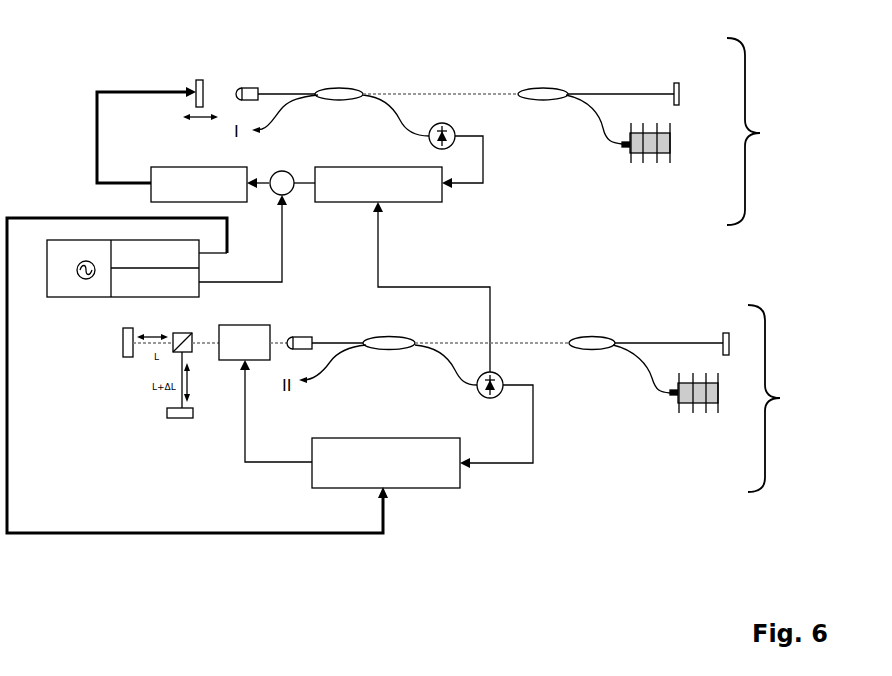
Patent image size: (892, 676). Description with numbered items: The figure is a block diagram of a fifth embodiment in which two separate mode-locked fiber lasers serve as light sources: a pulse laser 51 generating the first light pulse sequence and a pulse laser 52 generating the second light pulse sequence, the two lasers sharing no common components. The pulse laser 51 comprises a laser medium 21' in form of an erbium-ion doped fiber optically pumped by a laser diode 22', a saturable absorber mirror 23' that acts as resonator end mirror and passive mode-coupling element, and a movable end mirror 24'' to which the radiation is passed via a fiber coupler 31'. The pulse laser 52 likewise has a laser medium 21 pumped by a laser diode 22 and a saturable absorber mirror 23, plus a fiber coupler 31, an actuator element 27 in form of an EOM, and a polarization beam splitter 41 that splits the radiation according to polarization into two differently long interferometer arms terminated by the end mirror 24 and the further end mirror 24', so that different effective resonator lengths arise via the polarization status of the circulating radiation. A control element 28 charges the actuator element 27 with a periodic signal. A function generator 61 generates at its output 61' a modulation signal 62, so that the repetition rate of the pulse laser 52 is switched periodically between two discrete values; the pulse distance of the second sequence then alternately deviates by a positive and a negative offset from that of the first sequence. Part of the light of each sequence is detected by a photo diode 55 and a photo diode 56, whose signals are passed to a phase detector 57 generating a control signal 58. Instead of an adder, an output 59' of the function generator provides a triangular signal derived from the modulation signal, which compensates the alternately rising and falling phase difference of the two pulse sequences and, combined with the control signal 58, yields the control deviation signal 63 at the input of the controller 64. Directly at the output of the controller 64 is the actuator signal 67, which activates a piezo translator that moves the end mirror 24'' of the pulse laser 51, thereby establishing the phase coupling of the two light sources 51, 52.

The laser medium 21 is at (491, 315).
The laser medium 21' is at (440, 63).
The laser diode 22 is at (692, 428).
The laser diode 22' is at (646, 176).
The saturable absorber mirror (SESAM) 23 is at (695, 323).
The saturable absorber mirror (SESAM) 23' is at (642, 75).
The end mirror 24 is at (118, 337).
The further end mirror 24' is at (169, 442).
The movable end mirror 24'' is at (168, 72).
The actuator element 27 is at (243, 340).
The control element 28 is at (386, 463).
The fiber coupler 31 is at (325, 319).
The fiber coupler 31' is at (275, 64).
The polarization beam splitter 41 is at (185, 332).
The pulse laser 51 is at (757, 131).
The pulse laser 52 is at (777, 398).
The photo diode 55 is at (455, 126).
The photo diode 56 is at (480, 395).
The phase detector 57 is at (402, 269).
The control signal 58 is at (307, 187).
The output 59' is at (214, 244).
The function generator 61 is at (123, 268).
The output 61' is at (169, 256).
The modulation signal 62 is at (195, 533).
The control deviation signal 63 is at (262, 177).
The controller 64 is at (210, 184).
The actuator signal 67 is at (95, 135).